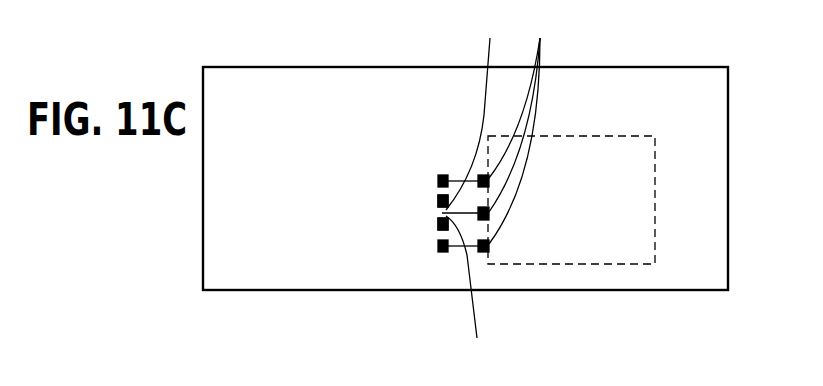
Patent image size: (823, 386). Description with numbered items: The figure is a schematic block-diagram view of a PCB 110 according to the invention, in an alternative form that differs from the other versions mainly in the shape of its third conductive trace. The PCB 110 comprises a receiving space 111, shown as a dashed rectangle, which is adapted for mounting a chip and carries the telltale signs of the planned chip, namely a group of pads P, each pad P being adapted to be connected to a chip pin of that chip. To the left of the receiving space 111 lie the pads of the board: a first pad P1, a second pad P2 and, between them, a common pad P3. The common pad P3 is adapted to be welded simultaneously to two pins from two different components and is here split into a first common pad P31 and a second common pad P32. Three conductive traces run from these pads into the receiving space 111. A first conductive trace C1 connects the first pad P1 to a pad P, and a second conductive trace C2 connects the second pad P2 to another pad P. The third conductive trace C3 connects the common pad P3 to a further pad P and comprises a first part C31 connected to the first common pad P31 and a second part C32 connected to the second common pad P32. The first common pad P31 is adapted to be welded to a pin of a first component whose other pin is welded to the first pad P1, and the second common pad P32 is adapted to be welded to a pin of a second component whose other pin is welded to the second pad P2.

The PCB 110 is at (728, 101).
The receiving space 111 is at (620, 136).
The first pad P1 is at (440, 176).
The second pad P2 is at (440, 252).
The common pad P3 is at (434, 189).
The first common pad P31 is at (438, 200).
The second common pad P32 is at (438, 221).
The pad P is at (515, 129).
The first conductive trace C1 is at (453, 181).
The second conductive trace C2 is at (453, 252).
The third conductive trace C3 is at (475, 247).
The first part of the third conductive trace C31 is at (478, 112).
The second part of the third conductive trace C32 is at (472, 289).